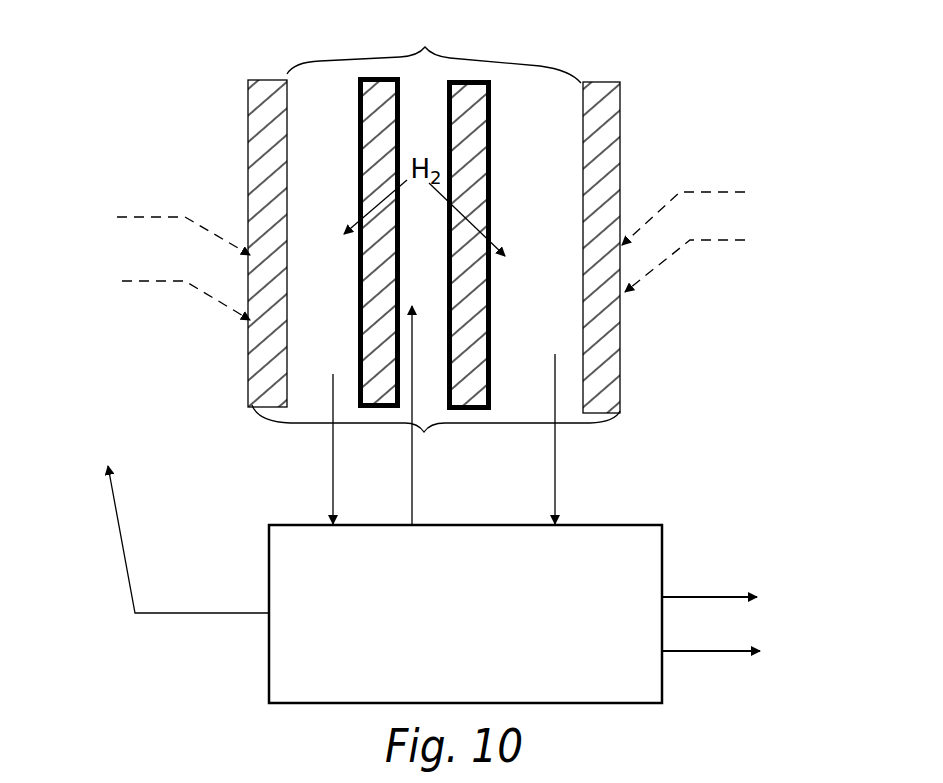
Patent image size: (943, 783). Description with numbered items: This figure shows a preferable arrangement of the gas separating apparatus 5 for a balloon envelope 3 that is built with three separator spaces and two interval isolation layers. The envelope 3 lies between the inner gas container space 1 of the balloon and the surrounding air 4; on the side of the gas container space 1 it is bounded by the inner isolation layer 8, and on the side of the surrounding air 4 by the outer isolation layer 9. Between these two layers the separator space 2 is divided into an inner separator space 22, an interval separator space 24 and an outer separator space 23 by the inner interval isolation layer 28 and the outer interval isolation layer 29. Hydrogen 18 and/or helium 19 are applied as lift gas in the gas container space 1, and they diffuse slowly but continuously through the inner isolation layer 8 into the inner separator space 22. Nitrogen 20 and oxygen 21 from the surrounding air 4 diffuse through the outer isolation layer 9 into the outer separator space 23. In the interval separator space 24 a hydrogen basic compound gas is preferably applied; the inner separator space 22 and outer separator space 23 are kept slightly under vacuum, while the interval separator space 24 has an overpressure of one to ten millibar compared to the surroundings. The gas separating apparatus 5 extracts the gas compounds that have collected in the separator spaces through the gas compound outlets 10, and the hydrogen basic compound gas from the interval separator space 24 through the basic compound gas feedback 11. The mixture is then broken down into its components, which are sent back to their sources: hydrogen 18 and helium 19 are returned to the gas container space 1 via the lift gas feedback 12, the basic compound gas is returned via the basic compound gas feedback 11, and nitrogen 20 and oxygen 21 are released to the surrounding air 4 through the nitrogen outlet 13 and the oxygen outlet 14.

The inner gas container space 1 is at (130, 168).
The separator space 2 is at (434, 50).
The envelope 3 is at (703, 155).
The surrounding air 4 is at (436, 438).
The gas separating apparatus 5 is at (465, 614).
The inner isolation layer 8 is at (252, 380).
The outer isolation layer 9 is at (622, 345).
The gas compound outlet 10 is at (458, 405).
The basic compound gas feedback 11 is at (426, 405).
The lift gas feedback 12 is at (177, 519).
The nitrogen outlet 13 is at (730, 594).
The oxygen outlet 14 is at (732, 648).
The hydrogen 18 is at (160, 224).
The helium 19 is at (164, 289).
The nitrogen 20 is at (706, 206).
The oxygen 21 is at (707, 252).
The inner separator space 22 is at (330, 115).
The outer separator space 23 is at (535, 112).
The interval separator space 24 is at (420, 115).
The inner interval isolation layer 28 is at (362, 378).
The outer interval isolation layer 29 is at (490, 378).